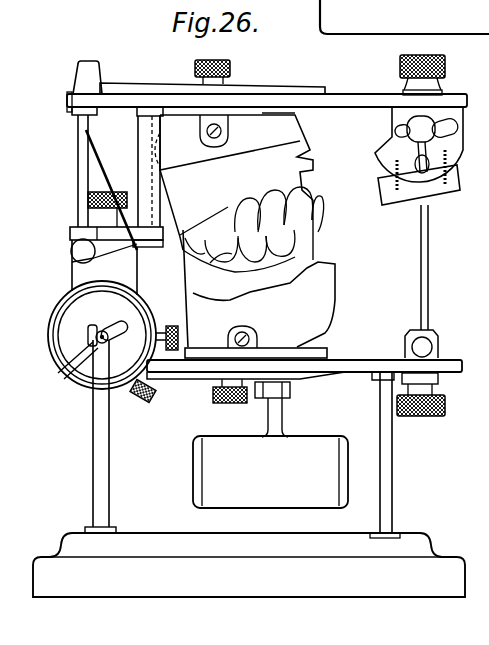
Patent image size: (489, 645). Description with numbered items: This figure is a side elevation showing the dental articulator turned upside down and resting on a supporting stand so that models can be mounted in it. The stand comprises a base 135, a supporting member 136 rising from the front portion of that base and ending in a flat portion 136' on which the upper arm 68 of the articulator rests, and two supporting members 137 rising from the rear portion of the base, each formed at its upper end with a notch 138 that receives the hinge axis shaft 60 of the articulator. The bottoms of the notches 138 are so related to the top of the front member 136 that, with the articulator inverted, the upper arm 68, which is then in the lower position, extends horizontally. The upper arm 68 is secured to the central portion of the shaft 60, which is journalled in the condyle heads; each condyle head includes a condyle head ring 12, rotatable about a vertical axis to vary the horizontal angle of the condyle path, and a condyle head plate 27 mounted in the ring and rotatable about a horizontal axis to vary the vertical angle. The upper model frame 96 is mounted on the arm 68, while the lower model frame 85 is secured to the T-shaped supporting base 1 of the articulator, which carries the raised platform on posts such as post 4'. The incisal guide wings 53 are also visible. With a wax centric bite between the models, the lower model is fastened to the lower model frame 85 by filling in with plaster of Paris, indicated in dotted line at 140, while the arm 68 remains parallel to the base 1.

The supporting base 1 is at (123, 102).
The post 4' is at (83, 195).
The condyle head plate 27 is at (98, 356).
The notch 138 is at (112, 341).
The hinge axis shaft 60 is at (63, 373).
The condyle head ring 12 is at (83, 389).
The supporting member 137 is at (106, 484).
The lower model frame 85 is at (293, 113).
The plaster of Paris 140 is at (298, 128).
The incisal guide wing 53 is at (385, 190).
The upper model frame 96 is at (293, 350).
The upper arm 68 is at (346, 364).
The flat portion 136' is at (360, 394).
The supporting member 136 is at (407, 455).
The base 135 is at (275, 573).